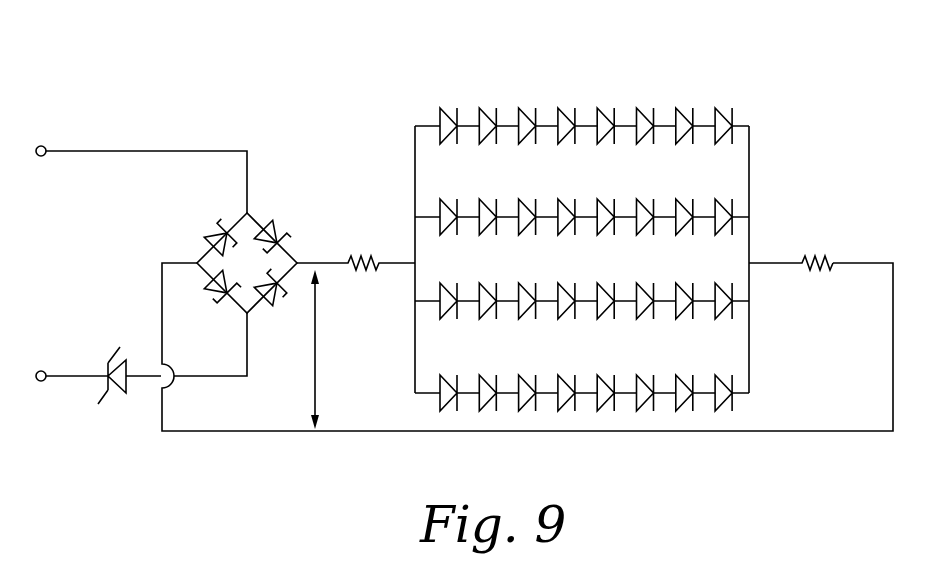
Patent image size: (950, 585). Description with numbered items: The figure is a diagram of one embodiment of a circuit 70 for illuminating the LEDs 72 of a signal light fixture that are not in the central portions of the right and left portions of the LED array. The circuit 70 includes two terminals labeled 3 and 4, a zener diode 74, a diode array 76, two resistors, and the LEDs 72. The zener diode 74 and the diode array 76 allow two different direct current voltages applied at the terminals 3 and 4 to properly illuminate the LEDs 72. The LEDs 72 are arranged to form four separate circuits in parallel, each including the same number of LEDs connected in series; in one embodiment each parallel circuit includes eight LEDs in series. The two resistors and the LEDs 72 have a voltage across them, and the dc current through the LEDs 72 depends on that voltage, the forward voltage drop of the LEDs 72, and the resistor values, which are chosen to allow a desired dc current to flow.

The circuit 70 is at (363, 62).
The LEDs 72 is at (573, 76).
The zener diode 74 is at (113, 362).
The diode array 76 is at (307, 206).
The terminal 3 is at (41, 360).
The terminal 4 is at (41, 139).